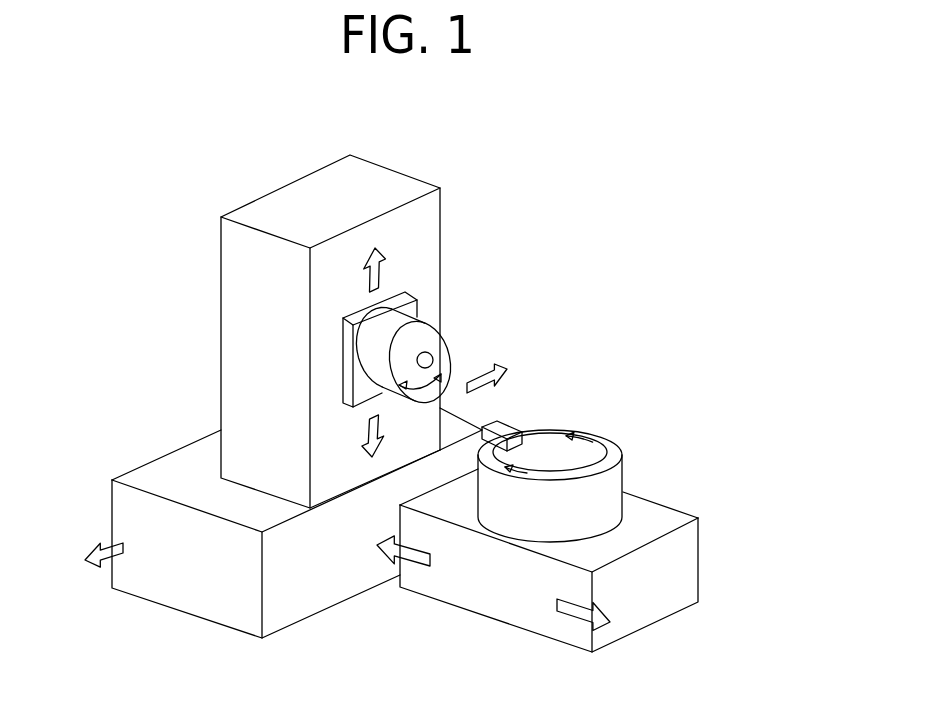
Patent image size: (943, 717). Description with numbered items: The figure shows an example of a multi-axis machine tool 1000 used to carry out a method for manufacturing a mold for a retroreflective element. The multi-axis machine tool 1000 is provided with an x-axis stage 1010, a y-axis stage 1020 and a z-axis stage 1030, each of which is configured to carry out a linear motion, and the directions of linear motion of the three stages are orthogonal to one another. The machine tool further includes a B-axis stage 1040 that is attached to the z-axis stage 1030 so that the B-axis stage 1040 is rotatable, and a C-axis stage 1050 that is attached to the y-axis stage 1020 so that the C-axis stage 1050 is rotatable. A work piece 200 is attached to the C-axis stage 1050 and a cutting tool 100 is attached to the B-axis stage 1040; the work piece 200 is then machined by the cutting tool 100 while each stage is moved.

The multi-axis machine tool 1000 is at (757, 134).
The x-axis stage 1010 is at (190, 593).
The y-axis stage 1020 is at (413, 290).
The z-axis stage 1030 is at (665, 588).
The B-axis stage 1040 is at (617, 452).
The cutting tool 100 is at (502, 421).
The work piece 200 is at (450, 347).
The C-axis stage 1050 is at (433, 358).